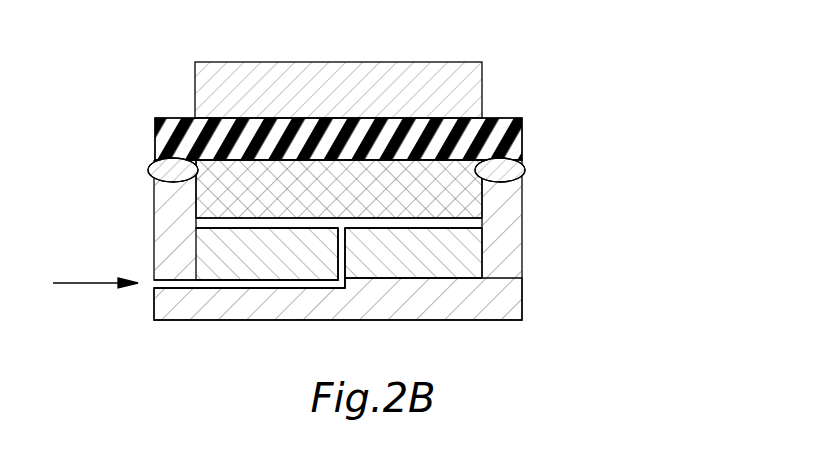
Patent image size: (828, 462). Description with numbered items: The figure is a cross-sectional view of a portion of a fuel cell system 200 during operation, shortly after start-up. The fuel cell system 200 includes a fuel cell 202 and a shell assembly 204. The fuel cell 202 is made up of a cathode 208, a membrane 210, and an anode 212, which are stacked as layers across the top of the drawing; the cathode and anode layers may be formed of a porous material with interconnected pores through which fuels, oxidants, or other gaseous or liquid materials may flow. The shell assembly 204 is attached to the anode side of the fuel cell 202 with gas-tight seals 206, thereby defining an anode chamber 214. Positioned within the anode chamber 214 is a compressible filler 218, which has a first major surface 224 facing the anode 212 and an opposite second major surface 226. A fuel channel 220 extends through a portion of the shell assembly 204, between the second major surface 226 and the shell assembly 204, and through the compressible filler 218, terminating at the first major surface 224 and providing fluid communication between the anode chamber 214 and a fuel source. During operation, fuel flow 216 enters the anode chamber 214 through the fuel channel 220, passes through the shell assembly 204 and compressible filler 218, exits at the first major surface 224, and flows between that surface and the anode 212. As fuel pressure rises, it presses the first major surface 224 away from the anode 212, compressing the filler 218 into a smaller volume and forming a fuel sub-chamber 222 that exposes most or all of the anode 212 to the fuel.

The fuel cell system 200 is at (622, 88).
The fuel cell 202 is at (155, 134).
The shell assembly 204 is at (523, 227).
The seals 206 is at (150, 170).
The cathode 208 is at (483, 92).
The membrane 210 is at (523, 140).
The anode 212 is at (465, 203).
The anode chamber 214 is at (442, 282).
The fuel flow 216 is at (84, 281).
The compressible filler 218 is at (466, 262).
The fuel channel 220 is at (287, 282).
The fuel sub-chamber 222 is at (250, 222).
The first major surface 224 is at (272, 224).
The second major surface 226 is at (370, 280).